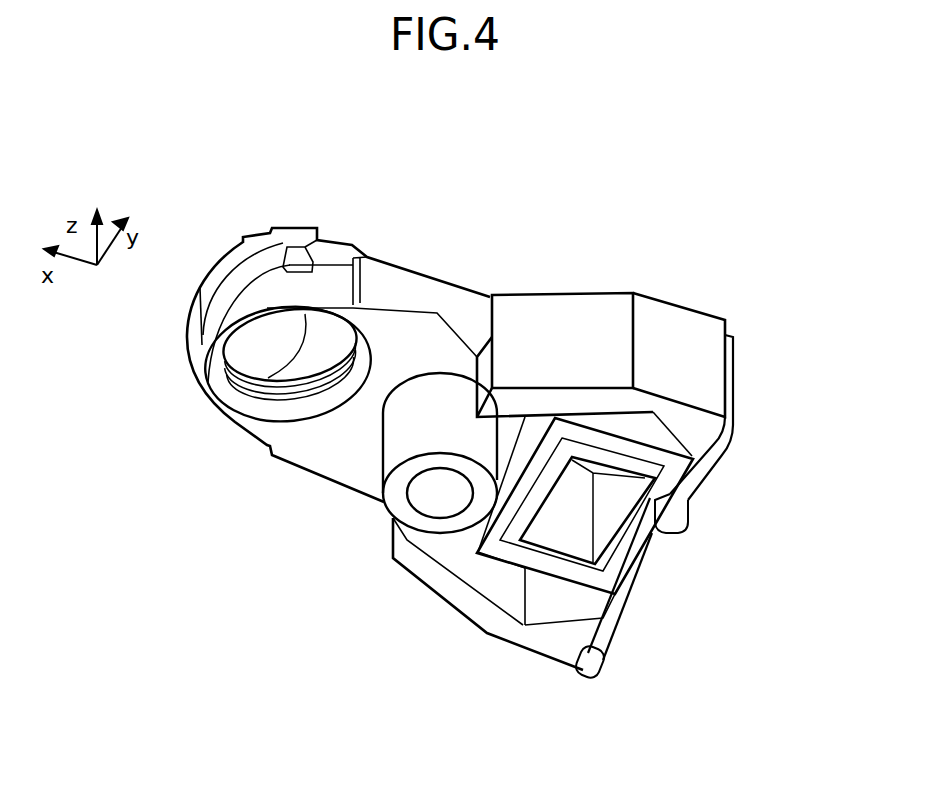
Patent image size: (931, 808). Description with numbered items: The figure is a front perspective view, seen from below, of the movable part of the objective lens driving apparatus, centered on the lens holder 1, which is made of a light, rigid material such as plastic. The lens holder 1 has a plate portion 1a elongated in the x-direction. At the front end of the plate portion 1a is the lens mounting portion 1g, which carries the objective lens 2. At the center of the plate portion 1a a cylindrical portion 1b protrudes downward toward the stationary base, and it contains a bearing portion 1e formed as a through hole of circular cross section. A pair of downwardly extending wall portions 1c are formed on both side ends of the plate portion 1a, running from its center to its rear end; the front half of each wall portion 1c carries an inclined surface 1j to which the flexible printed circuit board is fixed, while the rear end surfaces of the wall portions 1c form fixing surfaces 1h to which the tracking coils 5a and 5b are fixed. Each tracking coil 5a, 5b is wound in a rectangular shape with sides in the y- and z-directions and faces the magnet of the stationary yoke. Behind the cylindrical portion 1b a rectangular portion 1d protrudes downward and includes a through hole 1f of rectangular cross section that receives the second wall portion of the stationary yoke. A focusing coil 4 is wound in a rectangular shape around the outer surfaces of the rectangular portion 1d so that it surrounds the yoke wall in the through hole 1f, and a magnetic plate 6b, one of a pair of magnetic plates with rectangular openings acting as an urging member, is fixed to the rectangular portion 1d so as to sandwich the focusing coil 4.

The lens holder 1 is at (407, 266).
The plate portion 1a is at (447, 337).
The cylindrical portion 1b is at (390, 452).
The wall portion 1c is at (681, 330).
The rectangular portion 1d is at (513, 545).
The bearing portion 1e is at (415, 510).
The through hole 1f is at (563, 535).
The lens mounting portion 1g is at (242, 408).
The fixing surface 1h is at (711, 493).
The inclined surface 1j is at (577, 310).
The objective lens 2 is at (275, 332).
The focusing coil 4 is at (517, 556).
The tracking coil 5a is at (612, 640).
The tracking coil 5b is at (724, 447).
The magnetic plate 6b is at (613, 580).